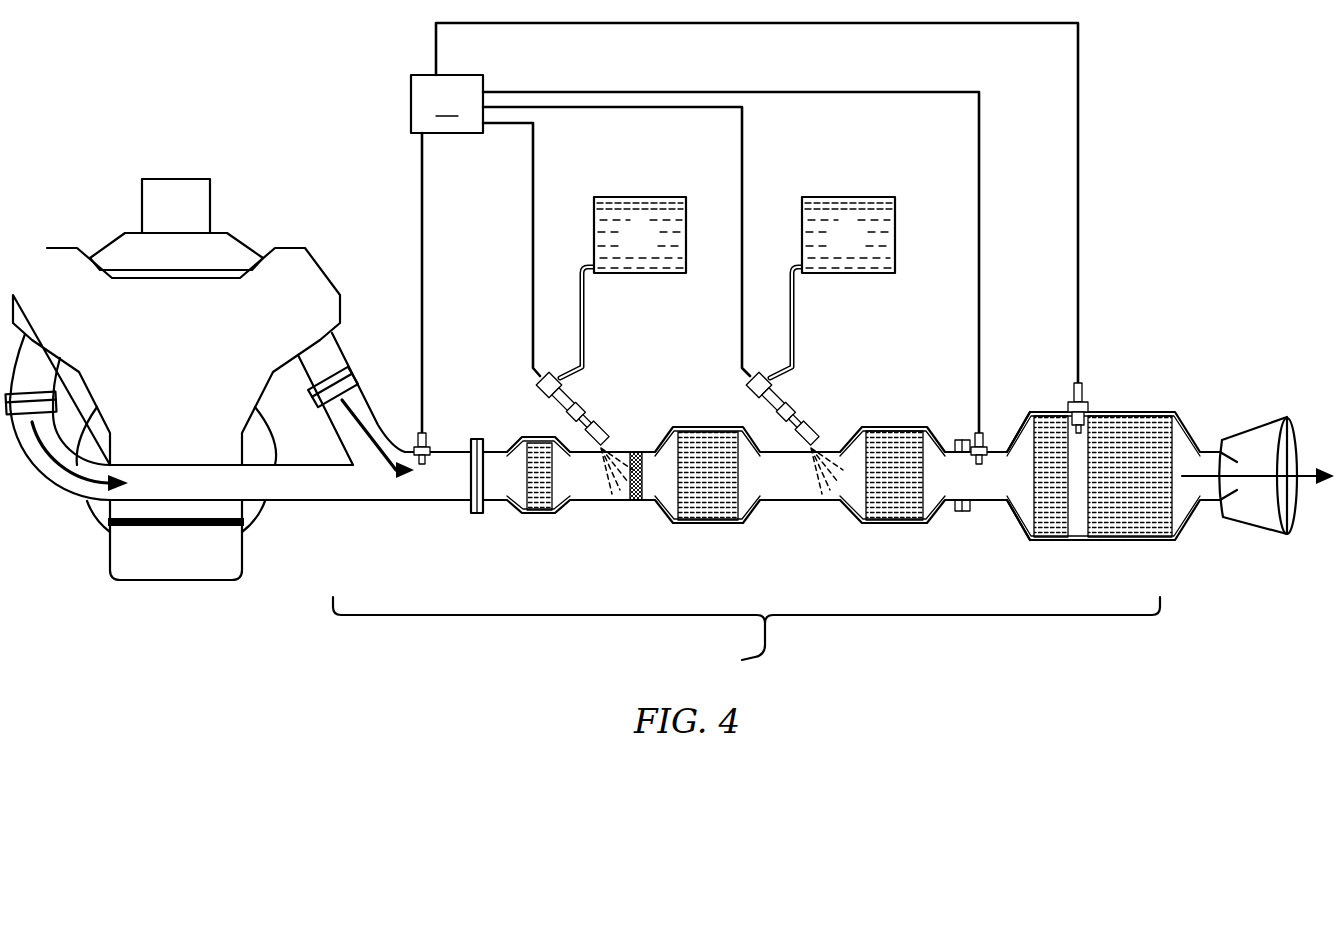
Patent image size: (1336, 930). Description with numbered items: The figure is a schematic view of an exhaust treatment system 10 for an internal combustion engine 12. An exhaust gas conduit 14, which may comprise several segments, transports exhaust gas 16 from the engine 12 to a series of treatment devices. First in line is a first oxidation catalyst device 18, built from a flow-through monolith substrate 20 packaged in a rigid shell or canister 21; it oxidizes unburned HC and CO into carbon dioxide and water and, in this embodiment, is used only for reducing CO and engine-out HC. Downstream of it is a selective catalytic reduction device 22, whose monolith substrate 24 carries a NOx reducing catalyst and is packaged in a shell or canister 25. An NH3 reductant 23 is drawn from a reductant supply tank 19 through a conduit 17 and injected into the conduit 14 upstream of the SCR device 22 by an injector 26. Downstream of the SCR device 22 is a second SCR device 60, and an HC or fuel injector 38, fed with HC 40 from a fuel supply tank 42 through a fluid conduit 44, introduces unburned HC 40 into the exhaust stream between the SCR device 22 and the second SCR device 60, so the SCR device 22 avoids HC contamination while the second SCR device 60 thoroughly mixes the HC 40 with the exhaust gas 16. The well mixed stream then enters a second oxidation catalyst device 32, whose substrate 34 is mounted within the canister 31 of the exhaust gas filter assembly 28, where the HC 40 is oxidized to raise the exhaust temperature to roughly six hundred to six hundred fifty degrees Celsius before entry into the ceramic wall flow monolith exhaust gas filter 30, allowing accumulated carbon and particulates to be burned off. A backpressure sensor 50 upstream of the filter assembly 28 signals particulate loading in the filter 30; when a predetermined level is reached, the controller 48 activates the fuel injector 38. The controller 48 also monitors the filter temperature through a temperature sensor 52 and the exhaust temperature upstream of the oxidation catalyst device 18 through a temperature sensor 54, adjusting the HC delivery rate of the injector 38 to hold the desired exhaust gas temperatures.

The exhaust treatment system 10 is at (746, 638).
The engine 12 is at (94, 229).
The exhaust gas conduit 14 is at (317, 503).
The exhaust gas 16 is at (63, 487).
The conduit 17 is at (585, 342).
The first oxidation catalyst device 18 is at (528, 518).
The reductant supply tank 19 is at (648, 206).
The substrate 20 is at (537, 452).
The shell or canister 21 is at (543, 514).
The selective catalytic reduction device 22 is at (695, 528).
The NH3 reductant 23 is at (628, 247).
The substrate 24 is at (712, 450).
The shell or canister 25 is at (713, 524).
The injector 26 is at (589, 420).
The exhaust gas filter assembly 28 is at (1192, 533).
The exhaust gas filter 30 is at (1140, 523).
The shell or canister 31 is at (1103, 542).
The second oxidation catalyst device 32 is at (1025, 512).
The substrate 34 is at (1053, 423).
The fuel injector 38 is at (799, 420).
The HC 40 is at (836, 247).
The fuel supply tank 42 is at (860, 190).
The fluid conduit 44 is at (795, 342).
The controller 48 is at (744, 228).
The backpressure sensor 50 is at (982, 440).
The temperature sensor 52 is at (1086, 392).
The temperature sensor 54 is at (430, 447).
The second SCR device 60 is at (882, 530).